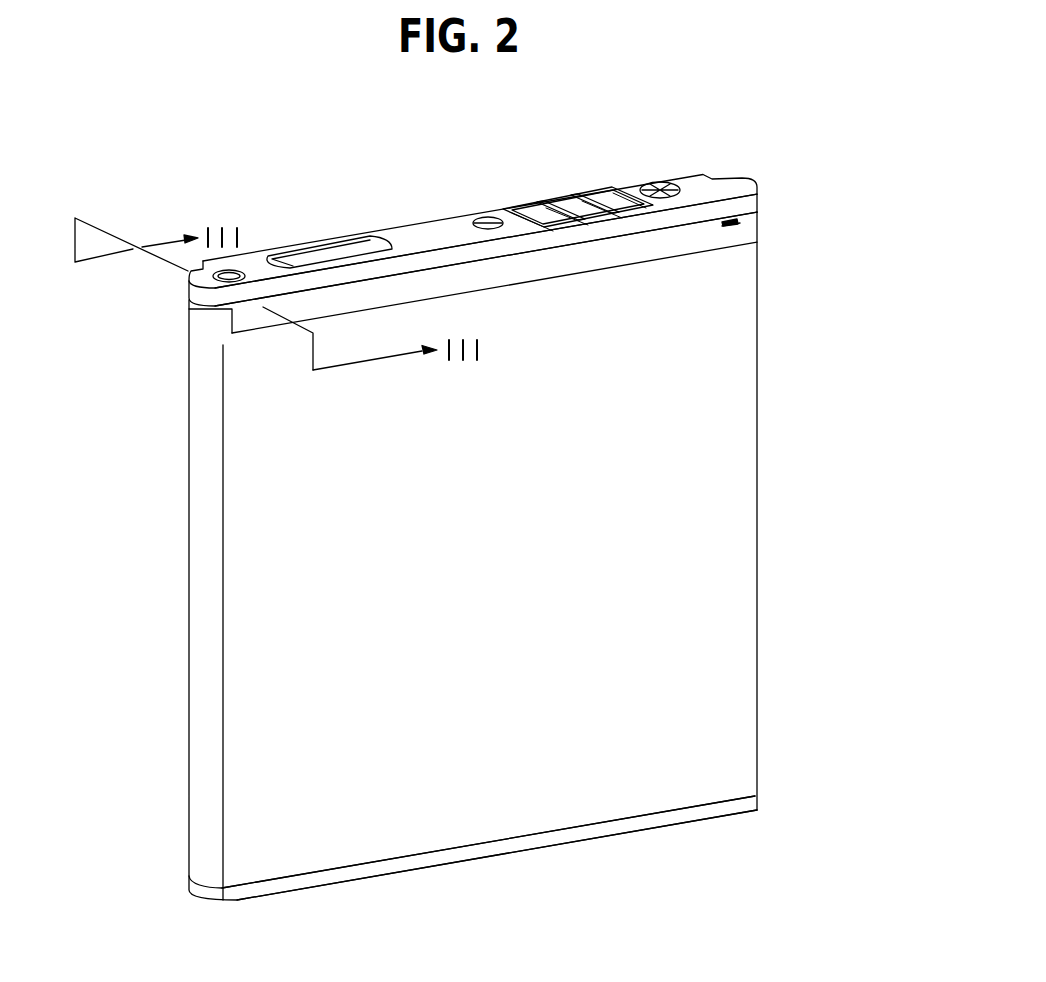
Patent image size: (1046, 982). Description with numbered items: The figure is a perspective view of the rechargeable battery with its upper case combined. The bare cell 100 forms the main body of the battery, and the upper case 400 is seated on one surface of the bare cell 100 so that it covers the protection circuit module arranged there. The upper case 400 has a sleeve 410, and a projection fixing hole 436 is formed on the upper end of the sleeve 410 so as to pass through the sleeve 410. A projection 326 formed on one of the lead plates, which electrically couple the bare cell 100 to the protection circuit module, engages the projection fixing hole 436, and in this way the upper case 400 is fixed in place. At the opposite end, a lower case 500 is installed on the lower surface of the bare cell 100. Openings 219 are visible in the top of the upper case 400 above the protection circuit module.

The bare cell 100 is at (735, 487).
The upper case 400 is at (473, 240).
The sleeve 410 is at (583, 263).
The terminal openings 219 is at (610, 192).
The projection fixing hole 436 is at (737, 220).
The projection 326 is at (730, 225).
The lower case 500 is at (743, 805).